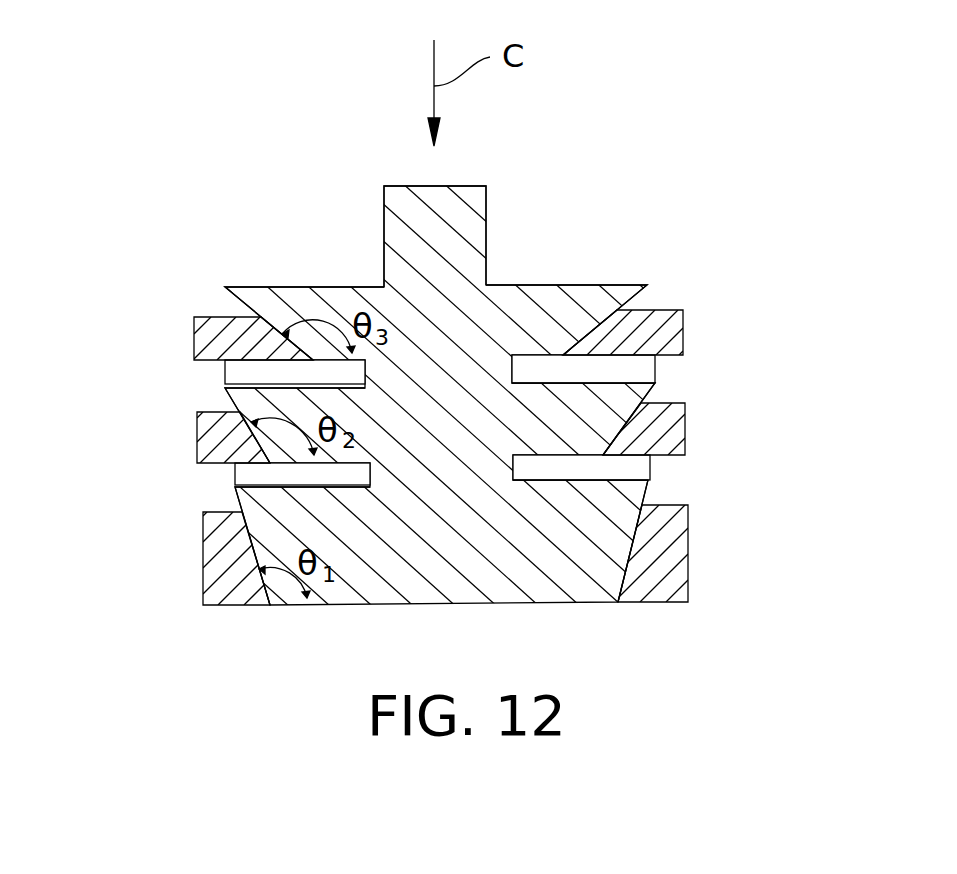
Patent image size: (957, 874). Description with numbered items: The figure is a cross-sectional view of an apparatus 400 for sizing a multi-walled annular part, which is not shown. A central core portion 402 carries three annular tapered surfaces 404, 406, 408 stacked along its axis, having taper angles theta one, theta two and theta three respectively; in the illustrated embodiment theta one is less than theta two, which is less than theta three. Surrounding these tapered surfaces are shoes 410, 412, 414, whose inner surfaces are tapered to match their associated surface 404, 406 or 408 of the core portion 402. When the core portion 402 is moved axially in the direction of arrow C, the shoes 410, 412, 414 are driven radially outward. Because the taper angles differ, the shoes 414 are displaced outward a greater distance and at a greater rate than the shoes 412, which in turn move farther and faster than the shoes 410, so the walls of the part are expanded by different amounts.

The apparatus for sizing a multi-walled annular part 400 is at (755, 255).
The core portion 402 is at (500, 249).
The annular tapered surface 404 is at (230, 498).
The annular tapered surface 406 is at (225, 400).
The annular tapered surface 408 is at (237, 308).
The shoes 410 is at (207, 560).
The shoes 412 is at (200, 437).
The shoes 414 is at (195, 342).